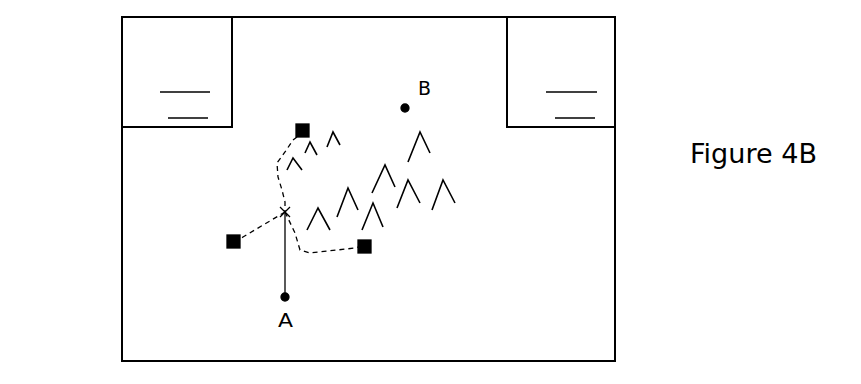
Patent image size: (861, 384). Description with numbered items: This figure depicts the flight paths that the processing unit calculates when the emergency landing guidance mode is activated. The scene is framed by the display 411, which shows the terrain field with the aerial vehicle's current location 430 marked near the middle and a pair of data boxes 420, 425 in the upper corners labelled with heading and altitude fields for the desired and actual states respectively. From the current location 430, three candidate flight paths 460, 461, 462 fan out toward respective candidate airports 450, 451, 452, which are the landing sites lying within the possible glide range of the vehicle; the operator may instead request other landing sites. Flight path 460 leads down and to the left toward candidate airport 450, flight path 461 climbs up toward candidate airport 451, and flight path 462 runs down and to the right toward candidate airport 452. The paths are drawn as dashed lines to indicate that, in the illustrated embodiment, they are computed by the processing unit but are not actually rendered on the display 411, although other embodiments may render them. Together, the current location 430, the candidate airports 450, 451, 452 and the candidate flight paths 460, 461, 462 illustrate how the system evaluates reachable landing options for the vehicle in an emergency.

The display 411 is at (92, 174).
The desired state data box 420 is at (122, 50).
The actual state data box 425 is at (617, 50).
The current location 430 is at (292, 208).
The candidate airport 450 is at (227, 247).
The candidate airport 451 is at (304, 121).
The candidate airport 452 is at (368, 254).
The flight path 460 is at (252, 227).
The flight path 461 is at (277, 162).
The flight path 462 is at (340, 254).